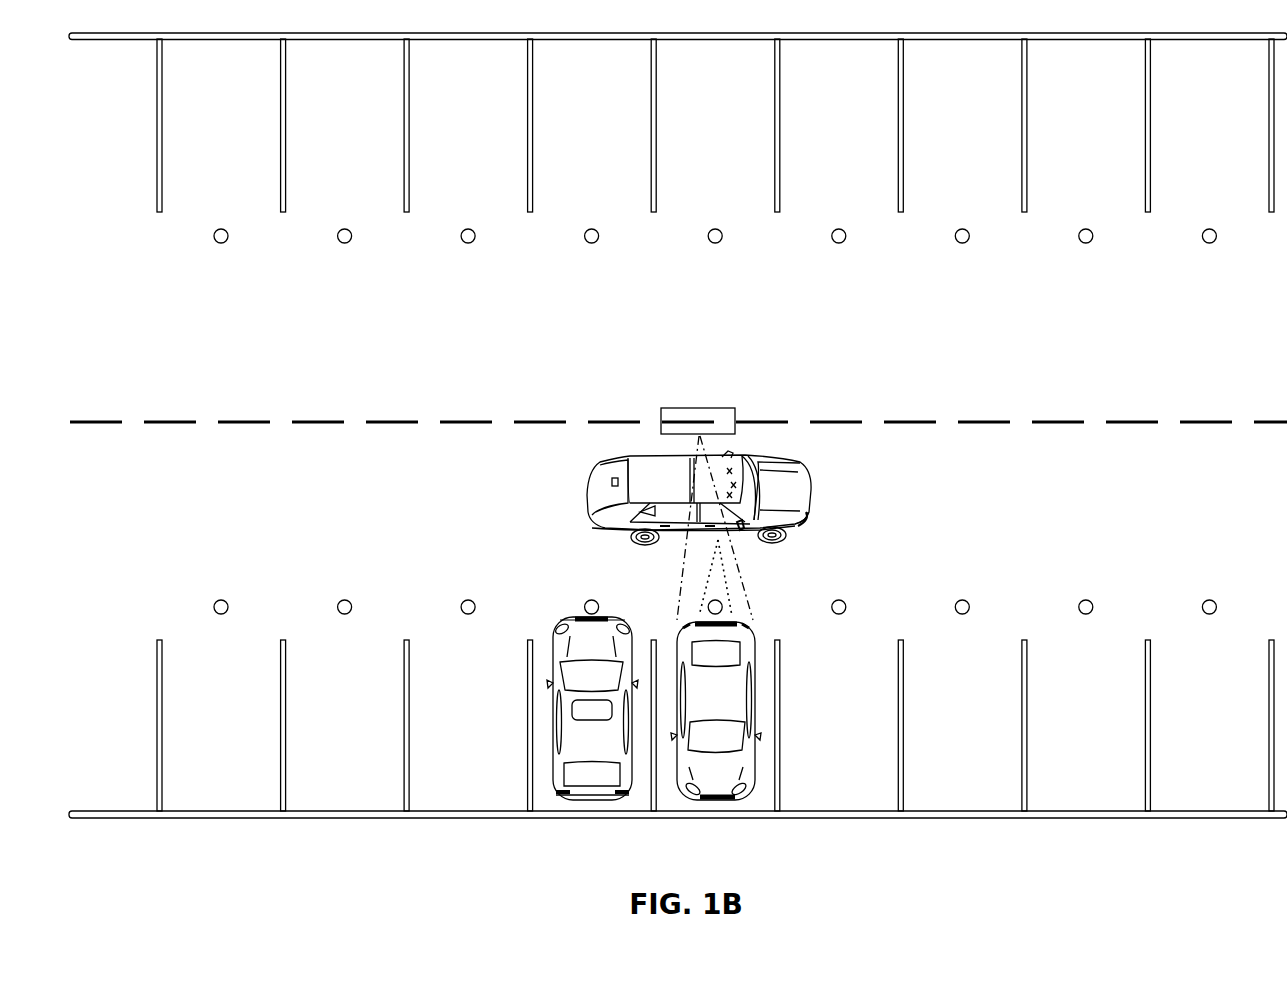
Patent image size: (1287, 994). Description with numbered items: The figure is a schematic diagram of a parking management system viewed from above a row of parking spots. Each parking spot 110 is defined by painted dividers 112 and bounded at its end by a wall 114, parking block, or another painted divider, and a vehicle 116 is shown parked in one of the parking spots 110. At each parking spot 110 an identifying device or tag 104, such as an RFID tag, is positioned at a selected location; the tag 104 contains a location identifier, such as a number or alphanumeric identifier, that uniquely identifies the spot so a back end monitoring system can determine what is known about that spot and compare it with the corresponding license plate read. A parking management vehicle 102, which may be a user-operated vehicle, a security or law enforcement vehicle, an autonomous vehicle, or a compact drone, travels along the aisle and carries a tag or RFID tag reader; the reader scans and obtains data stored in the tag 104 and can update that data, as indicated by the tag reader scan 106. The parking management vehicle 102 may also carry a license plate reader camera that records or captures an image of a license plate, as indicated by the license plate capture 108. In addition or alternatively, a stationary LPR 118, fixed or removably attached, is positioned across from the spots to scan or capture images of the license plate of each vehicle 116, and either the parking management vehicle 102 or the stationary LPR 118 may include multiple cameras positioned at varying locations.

The parking management vehicle 102 is at (800, 517).
The tag 104 is at (698, 604).
The tag reader scan 106 is at (733, 589).
The license plate capture 108 is at (666, 578).
The parking spot 110 is at (767, 662).
The painted divider 112 is at (782, 758).
The wall 114 is at (828, 820).
The vehicle 116 is at (722, 797).
The stationary LPR 118 is at (700, 406).